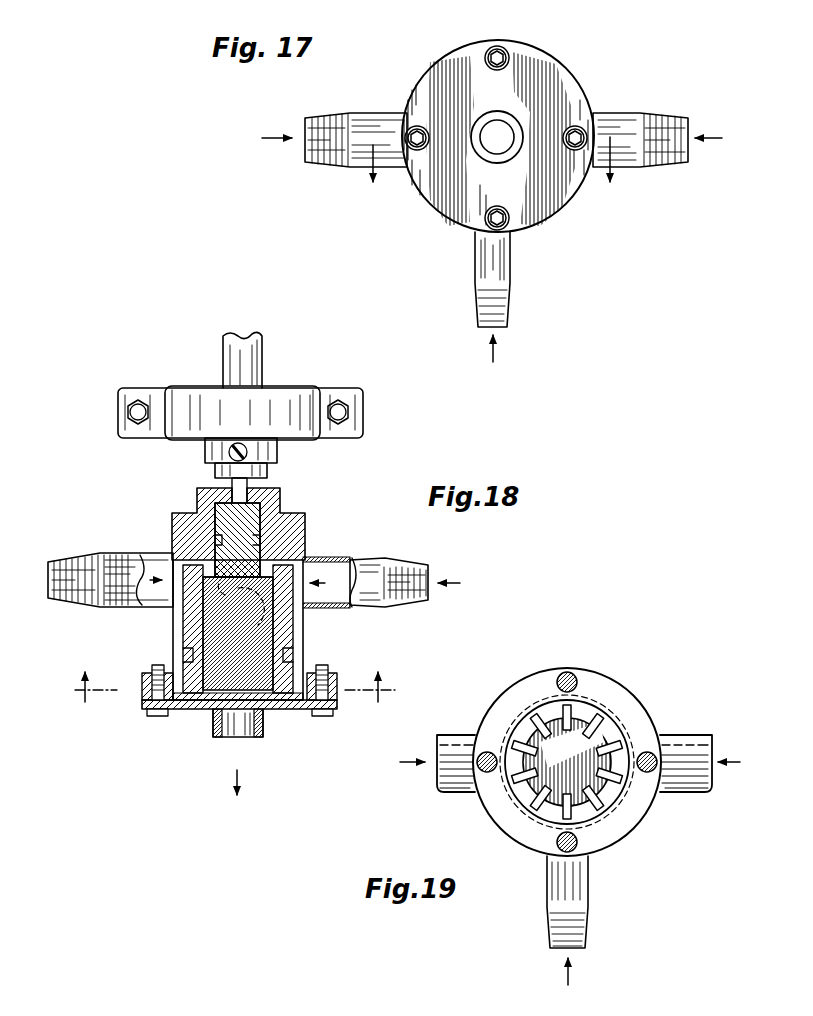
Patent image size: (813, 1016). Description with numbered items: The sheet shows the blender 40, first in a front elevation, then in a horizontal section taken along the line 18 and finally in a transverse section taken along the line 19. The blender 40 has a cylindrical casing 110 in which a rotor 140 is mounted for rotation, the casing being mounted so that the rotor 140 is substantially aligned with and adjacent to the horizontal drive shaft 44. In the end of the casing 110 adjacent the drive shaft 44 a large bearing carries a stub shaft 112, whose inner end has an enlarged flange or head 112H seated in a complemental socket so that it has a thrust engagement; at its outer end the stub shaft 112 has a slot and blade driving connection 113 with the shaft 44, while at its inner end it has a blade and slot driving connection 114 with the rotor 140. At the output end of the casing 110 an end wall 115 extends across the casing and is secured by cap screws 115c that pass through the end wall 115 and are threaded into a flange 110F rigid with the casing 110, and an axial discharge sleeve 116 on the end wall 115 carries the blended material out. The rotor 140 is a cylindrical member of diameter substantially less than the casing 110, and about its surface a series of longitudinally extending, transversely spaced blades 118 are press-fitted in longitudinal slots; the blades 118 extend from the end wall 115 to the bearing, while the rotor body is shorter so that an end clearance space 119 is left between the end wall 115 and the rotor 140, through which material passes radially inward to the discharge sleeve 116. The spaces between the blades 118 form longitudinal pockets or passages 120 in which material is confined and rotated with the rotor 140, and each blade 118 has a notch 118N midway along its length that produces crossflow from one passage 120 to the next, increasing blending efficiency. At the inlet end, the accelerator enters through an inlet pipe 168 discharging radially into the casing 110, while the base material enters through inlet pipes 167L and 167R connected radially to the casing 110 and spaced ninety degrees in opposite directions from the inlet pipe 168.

In FIG. 17, the blender 40 is at (572, 62).
In FIG. 18, the blender 40 is at (320, 523).
In FIG. 19, the blender 40 is at (615, 670).
In FIG. 18, the shaft 44 is at (228, 335).
In FIG. 17, the section line 18— 18 is at (492, 172).
In FIG. 18, the section line 19— 19 is at (224, 687).
In FIG. 18, the cylindrical casing 110 is at (185, 652).
In FIG. 19, the cylindrical casing 110 is at (500, 715).
In FIG. 18, the flange 110F is at (143, 688).
In FIG. 19, the flange 110F is at (608, 836).
In FIG. 18, the stub shaft 112 is at (278, 500).
In FIG. 18, the enlarged flange or head 112H is at (262, 560).
In FIG. 18, the slot and blade driving connection 113 is at (232, 490).
In FIG. 18, the blade and slot driving connection 114 is at (300, 575).
In FIG. 17, the end wall 115 is at (438, 190).
In FIG. 18, the end wall 115 is at (185, 712).
In FIG. 17, the cap screws 115c is at (580, 126).
In FIG. 18, the cap screws 115c is at (145, 712).
In FIG. 19, the cap screws 115c is at (490, 775).
In FIG. 17, the discharge sleeve 116 is at (506, 158).
In FIG. 18, the discharge sleeve 116 is at (262, 728).
In FIG. 18, the blades 118 is at (195, 660).
In FIG. 19, the blades 118 is at (612, 803).
In FIG. 18, the notch 118N is at (183, 650).
In FIG. 18, the end clearance space 119 is at (213, 700).
In FIG. 19, the pockets or passages 120 is at (553, 713).
In FIG. 18, the rotor 140 is at (247, 690).
In FIG. 19, the rotor 140 is at (580, 745).
In FIG. 17, the inlet pipe 167L is at (330, 160).
In FIG. 18, the inlet pipe 167L is at (115, 560).
In FIG. 19, the inlet pipe 167L is at (447, 768).
In FIG. 17, the inlet pipe 167R is at (645, 158).
In FIG. 18, the inlet pipe 167R is at (365, 578).
In FIG. 19, the inlet pipe 167R is at (698, 768).
In FIG. 17, the inlet pipe 168 is at (510, 270).
In FIG. 18, the inlet pipe 168 is at (238, 658).
In FIG. 19, the inlet pipe 168 is at (578, 900).